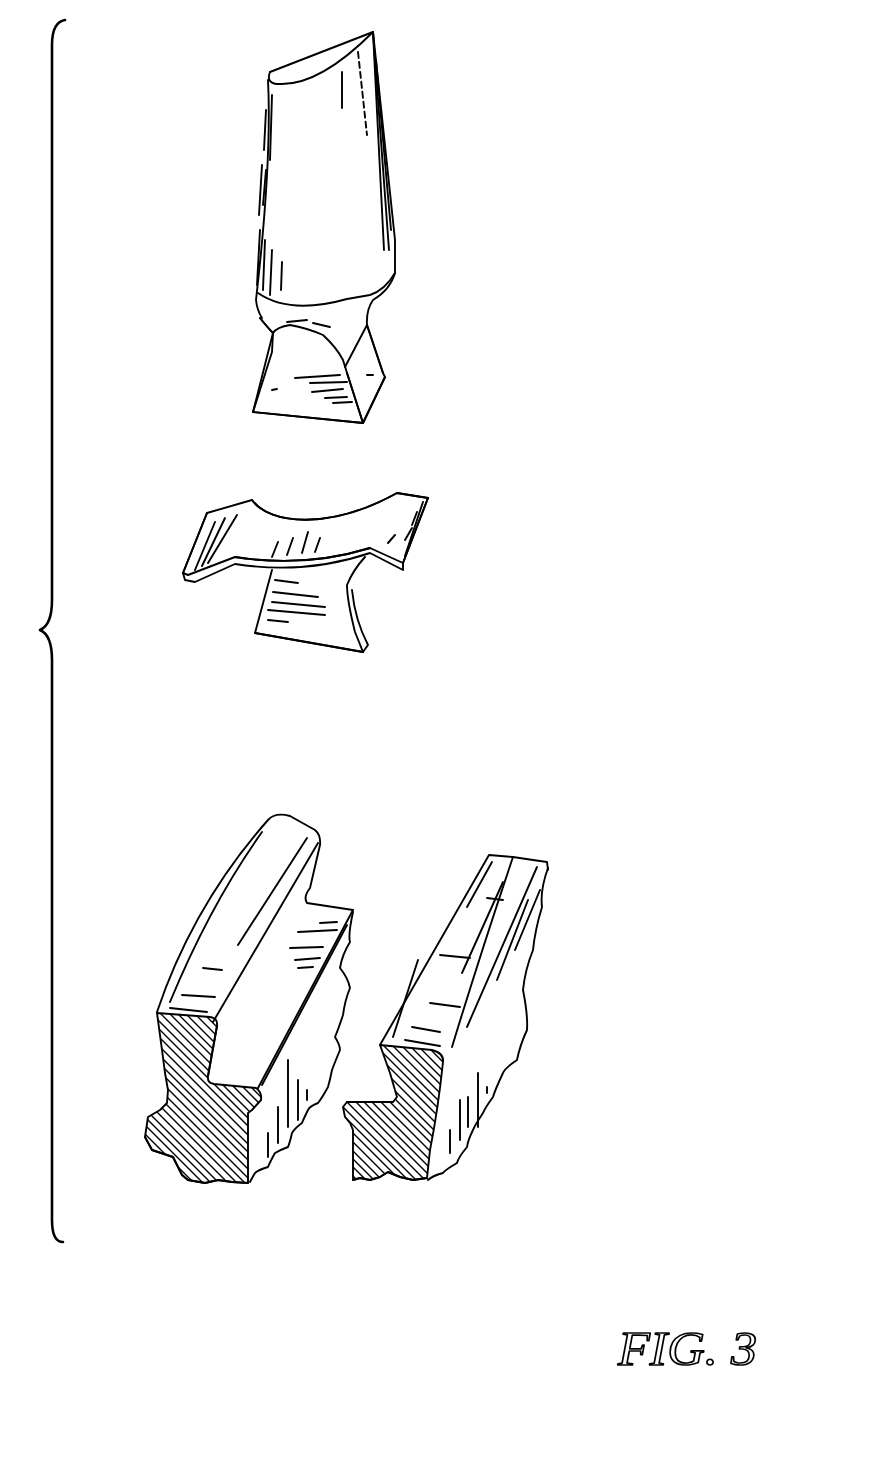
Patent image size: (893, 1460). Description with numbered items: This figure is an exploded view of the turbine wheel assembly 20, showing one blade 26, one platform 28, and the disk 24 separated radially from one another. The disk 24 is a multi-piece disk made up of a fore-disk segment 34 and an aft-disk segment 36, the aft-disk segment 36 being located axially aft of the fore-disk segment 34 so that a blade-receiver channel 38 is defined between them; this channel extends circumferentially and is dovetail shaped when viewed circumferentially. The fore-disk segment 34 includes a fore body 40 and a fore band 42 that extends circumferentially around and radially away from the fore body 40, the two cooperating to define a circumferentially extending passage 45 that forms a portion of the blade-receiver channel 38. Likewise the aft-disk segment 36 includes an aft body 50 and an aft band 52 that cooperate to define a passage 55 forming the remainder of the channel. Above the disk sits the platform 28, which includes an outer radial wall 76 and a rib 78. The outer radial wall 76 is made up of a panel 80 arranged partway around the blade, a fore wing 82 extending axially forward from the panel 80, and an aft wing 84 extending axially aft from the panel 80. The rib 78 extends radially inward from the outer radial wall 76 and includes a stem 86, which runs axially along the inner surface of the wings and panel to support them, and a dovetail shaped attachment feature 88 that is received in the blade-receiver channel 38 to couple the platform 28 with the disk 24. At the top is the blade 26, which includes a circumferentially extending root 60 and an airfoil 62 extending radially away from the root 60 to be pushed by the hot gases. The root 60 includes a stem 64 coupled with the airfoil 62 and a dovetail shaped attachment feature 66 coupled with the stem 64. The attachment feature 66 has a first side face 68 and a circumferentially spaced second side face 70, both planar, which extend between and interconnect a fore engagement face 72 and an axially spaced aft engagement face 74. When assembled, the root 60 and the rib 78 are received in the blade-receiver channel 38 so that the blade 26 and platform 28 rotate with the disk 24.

The wheel assembly 20 is at (575, 320).
The disk 24 is at (588, 915).
The blade 26 is at (408, 108).
The platform 28 is at (452, 516).
The fore-disk segment 34 is at (170, 947).
The aft-disk segment 36 is at (502, 1062).
The blade-receiver channel 38 is at (369, 967).
The fore body 40 is at (207, 1165).
The fore band 42 is at (183, 1063).
The passage 45 is at (250, 1032).
The aft body 50 is at (379, 1180).
The aft band 52 is at (420, 1070).
The passage 55 is at (488, 855).
The root 60 is at (397, 332).
The airfoil 62 is at (397, 208).
The stem 64 is at (280, 337).
The attachment feature 66 is at (337, 410).
The first side face 68 is at (302, 397).
The second side face 70 is at (387, 377).
The fore engagement face 72 is at (273, 387).
The aft engagement face 74 is at (372, 405).
The outer radial wall 76 is at (432, 540).
The rib 78 is at (257, 602).
The panel 80 is at (327, 535).
The fore wing 82 is at (208, 517).
The aft wing 84 is at (422, 491).
The stem 86 is at (367, 562).
The attachment feature 88 is at (307, 632).